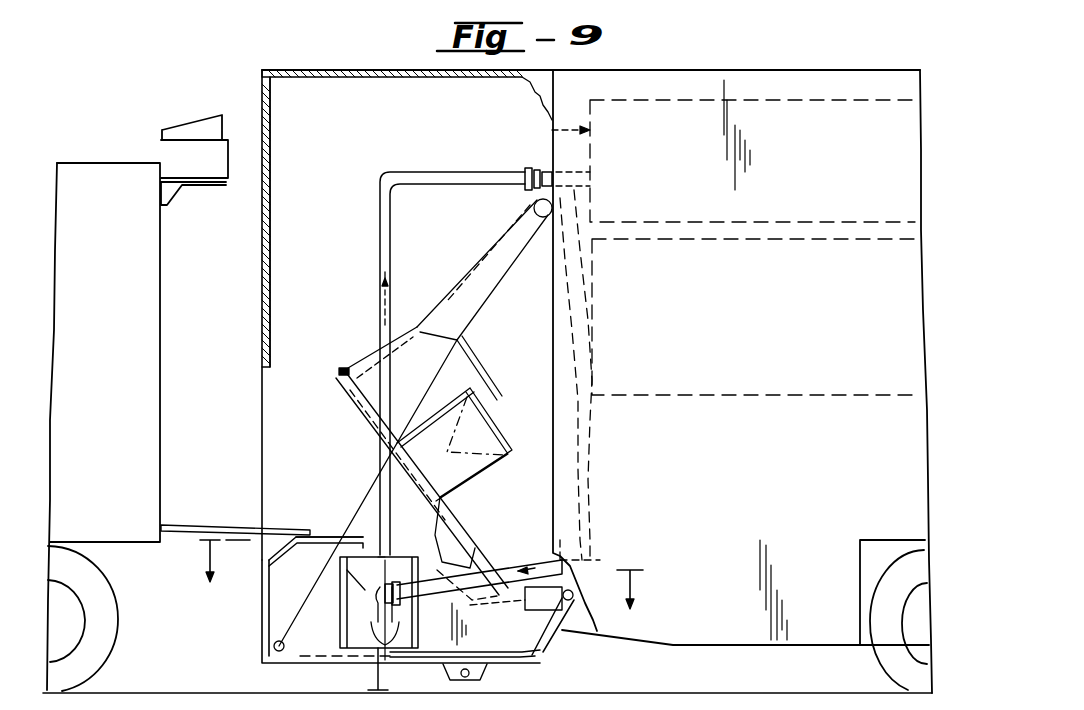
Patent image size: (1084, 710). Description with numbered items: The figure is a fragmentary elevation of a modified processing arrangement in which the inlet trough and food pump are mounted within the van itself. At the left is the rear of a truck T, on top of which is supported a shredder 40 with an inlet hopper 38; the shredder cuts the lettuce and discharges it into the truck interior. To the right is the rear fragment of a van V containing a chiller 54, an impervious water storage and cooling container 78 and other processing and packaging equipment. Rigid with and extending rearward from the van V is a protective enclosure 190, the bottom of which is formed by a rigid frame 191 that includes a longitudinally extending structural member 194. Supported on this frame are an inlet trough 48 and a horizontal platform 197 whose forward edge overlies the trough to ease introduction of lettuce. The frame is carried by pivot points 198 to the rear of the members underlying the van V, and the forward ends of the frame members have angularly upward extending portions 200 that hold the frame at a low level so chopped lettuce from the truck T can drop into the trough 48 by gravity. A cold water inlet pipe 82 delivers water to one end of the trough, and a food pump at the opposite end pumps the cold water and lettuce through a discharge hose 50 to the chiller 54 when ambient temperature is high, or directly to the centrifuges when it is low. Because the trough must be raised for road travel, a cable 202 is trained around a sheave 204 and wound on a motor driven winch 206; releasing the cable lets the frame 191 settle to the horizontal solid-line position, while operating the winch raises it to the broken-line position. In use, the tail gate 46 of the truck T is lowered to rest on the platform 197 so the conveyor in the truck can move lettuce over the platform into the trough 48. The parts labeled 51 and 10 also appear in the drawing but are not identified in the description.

The truck T is at (104, 160).
The van V is at (667, 68).
The inlet hopper 38 is at (183, 124).
The shredder 40 is at (191, 192).
The protective enclosure 190 is at (316, 70).
The impervious water storage and cooling container 78 is at (690, 396).
The discharge hose 50 is at (378, 220).
The pipe fitting 51 is at (530, 168).
The chiller 54 is at (549, 130).
The sheave 204 is at (541, 218).
The cable 202 is at (478, 306).
The rigid frame 191 is at (333, 368).
The longitudinally extending structural member 194 is at (366, 428).
The tail gate 46 is at (236, 524).
The direction of movement 10 is at (416, 574).
The horizontal platform 197 is at (322, 535).
The inlet trough 48 is at (342, 594).
The cold water inlet pipe 82 is at (508, 572).
The angularly upward extending portions 200 is at (538, 636).
The pivot points 198 is at (577, 618).
The motor driven winch 206 is at (598, 548).